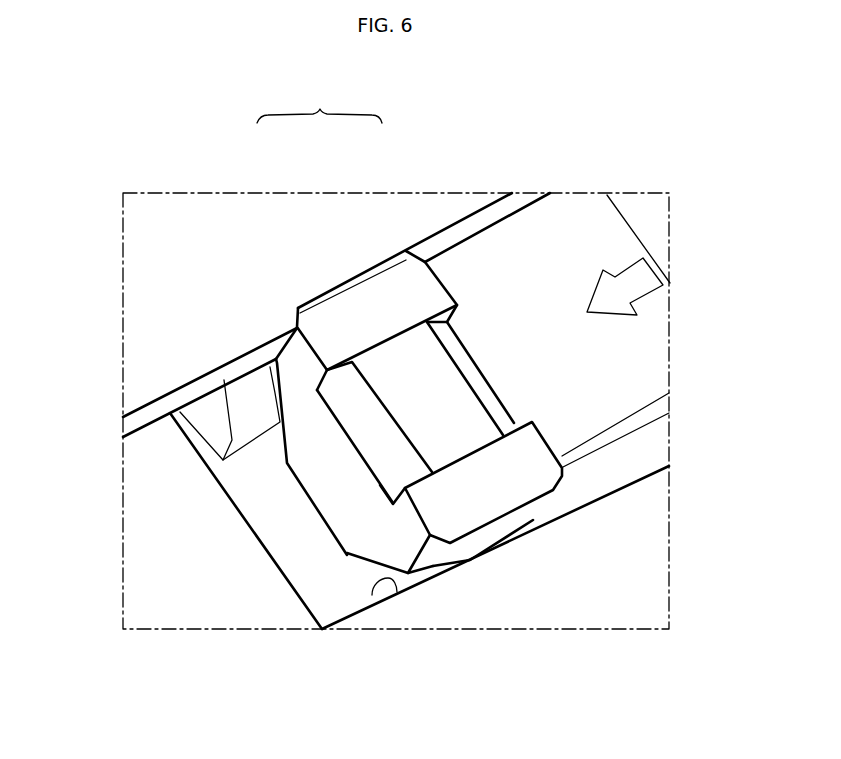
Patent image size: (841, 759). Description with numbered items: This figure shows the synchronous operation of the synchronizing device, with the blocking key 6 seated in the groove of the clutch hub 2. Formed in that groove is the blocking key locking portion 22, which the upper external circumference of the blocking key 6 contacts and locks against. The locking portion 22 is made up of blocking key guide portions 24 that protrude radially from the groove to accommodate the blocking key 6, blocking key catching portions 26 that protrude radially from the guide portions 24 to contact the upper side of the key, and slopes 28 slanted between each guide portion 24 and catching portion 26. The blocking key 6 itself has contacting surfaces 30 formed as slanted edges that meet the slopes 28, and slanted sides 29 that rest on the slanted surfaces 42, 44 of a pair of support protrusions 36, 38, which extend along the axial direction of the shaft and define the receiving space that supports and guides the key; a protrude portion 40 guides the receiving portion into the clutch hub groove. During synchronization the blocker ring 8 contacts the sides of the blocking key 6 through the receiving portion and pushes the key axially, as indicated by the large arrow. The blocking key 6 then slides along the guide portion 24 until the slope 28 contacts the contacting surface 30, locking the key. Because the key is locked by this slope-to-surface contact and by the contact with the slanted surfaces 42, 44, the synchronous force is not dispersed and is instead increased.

The clutch hub 2 is at (135, 244).
The blocking key 6 is at (293, 504).
The blocker ring 8 is at (660, 442).
The blocking key locking portion 22 is at (319, 106).
The blocking key guide portion 24 is at (437, 242).
The blocking key catching portion 26 is at (235, 370).
The slope 28 is at (297, 318).
The slanted side 29 is at (287, 442).
The contacting surface 30 is at (277, 442).
The support protrusion 36 is at (208, 412).
The support protrusion 38 is at (333, 600).
The protrude portion 40 is at (584, 230).
The slanted surface 42 is at (200, 450).
The slanted surface 44 is at (350, 572).